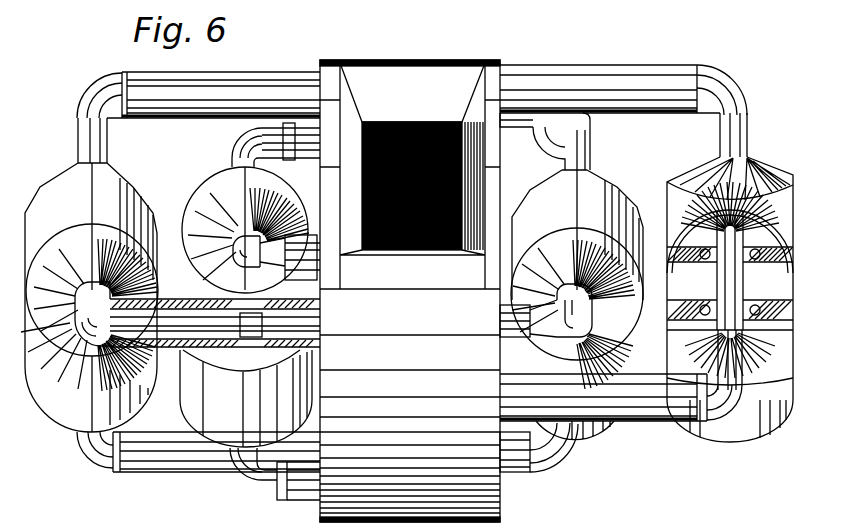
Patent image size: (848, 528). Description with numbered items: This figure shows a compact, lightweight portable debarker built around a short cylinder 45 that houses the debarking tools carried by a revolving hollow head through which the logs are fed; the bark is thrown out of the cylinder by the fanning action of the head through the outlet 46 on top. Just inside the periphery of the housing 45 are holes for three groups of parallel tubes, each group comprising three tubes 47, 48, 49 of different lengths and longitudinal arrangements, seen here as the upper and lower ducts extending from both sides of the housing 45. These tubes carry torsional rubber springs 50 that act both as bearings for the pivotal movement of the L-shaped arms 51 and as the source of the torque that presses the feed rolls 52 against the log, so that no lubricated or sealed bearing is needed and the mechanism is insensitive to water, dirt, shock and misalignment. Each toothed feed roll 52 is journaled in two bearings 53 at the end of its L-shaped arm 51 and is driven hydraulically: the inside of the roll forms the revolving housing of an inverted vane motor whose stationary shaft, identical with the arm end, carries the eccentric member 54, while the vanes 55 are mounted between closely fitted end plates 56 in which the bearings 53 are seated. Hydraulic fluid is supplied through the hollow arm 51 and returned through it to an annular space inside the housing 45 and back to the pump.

The short cylinder 45 is at (477, 491).
The outlet 46 is at (460, 88).
The tube 47 is at (662, 47).
The tube 48 is at (212, 108).
The tube 49 is at (278, 503).
The torsional rubber spring 50 is at (165, 297).
The L-shaped arm 51 is at (82, 140).
The feed roll 52 is at (75, 419).
The bearing 53 is at (700, 324).
The eccentric member 54 is at (708, 227).
The vane 55 is at (732, 302).
The end plate 56 is at (780, 404).